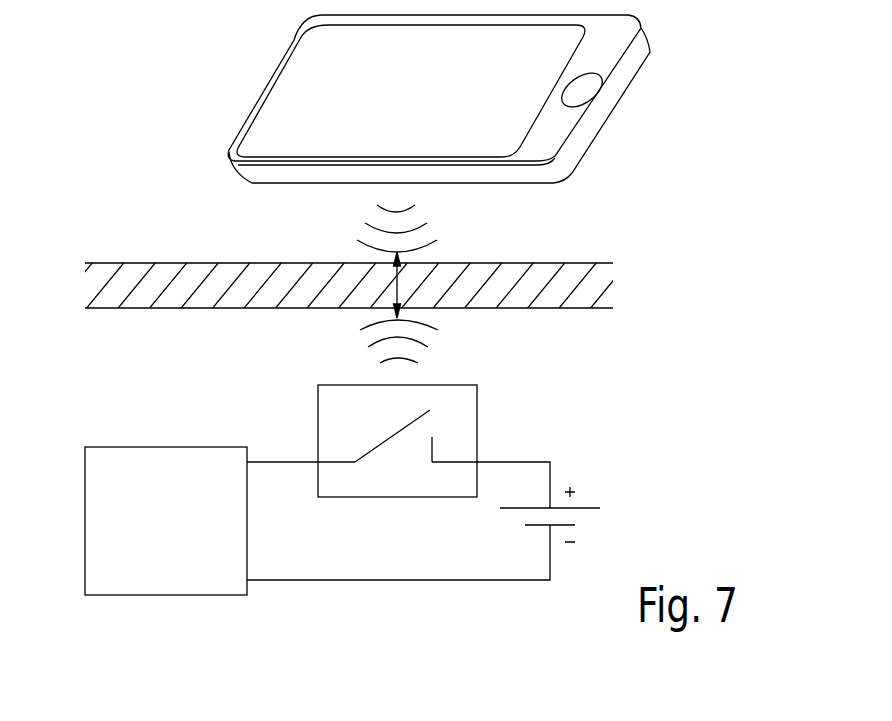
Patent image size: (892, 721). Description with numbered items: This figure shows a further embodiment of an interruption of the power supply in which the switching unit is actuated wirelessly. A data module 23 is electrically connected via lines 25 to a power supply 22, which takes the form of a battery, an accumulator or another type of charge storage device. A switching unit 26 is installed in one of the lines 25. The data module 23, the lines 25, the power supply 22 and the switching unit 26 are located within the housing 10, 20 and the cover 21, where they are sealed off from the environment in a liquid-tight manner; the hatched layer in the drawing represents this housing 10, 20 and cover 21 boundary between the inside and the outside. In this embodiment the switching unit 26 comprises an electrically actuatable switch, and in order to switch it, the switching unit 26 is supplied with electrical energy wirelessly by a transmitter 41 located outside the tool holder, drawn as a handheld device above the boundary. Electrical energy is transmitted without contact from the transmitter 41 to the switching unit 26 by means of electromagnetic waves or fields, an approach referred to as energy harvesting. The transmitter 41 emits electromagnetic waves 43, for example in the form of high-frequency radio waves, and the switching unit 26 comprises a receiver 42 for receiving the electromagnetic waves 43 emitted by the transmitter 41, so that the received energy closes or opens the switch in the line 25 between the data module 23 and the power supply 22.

The floor/wall structure 10 is at (340, 218).
The housing 20 is at (340, 218).
The cover 21 is at (125, 283).
The power supply 22 is at (588, 495).
The data module 23 is at (113, 595).
The lines 25 is at (517, 463).
The switching unit 26 is at (387, 438).
The transmitter 41 is at (633, 68).
The receiver 42 is at (457, 385).
The electromagnetic waves 43 is at (438, 230).